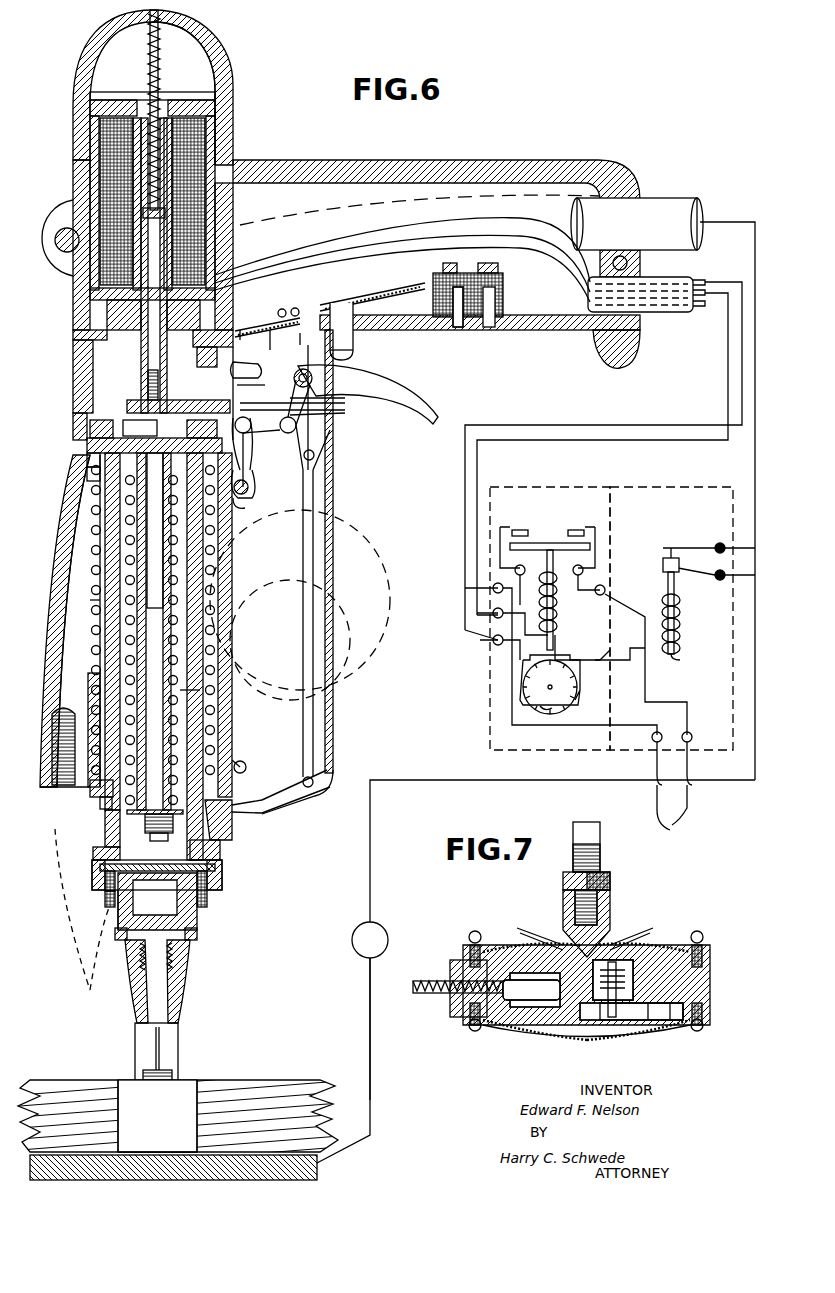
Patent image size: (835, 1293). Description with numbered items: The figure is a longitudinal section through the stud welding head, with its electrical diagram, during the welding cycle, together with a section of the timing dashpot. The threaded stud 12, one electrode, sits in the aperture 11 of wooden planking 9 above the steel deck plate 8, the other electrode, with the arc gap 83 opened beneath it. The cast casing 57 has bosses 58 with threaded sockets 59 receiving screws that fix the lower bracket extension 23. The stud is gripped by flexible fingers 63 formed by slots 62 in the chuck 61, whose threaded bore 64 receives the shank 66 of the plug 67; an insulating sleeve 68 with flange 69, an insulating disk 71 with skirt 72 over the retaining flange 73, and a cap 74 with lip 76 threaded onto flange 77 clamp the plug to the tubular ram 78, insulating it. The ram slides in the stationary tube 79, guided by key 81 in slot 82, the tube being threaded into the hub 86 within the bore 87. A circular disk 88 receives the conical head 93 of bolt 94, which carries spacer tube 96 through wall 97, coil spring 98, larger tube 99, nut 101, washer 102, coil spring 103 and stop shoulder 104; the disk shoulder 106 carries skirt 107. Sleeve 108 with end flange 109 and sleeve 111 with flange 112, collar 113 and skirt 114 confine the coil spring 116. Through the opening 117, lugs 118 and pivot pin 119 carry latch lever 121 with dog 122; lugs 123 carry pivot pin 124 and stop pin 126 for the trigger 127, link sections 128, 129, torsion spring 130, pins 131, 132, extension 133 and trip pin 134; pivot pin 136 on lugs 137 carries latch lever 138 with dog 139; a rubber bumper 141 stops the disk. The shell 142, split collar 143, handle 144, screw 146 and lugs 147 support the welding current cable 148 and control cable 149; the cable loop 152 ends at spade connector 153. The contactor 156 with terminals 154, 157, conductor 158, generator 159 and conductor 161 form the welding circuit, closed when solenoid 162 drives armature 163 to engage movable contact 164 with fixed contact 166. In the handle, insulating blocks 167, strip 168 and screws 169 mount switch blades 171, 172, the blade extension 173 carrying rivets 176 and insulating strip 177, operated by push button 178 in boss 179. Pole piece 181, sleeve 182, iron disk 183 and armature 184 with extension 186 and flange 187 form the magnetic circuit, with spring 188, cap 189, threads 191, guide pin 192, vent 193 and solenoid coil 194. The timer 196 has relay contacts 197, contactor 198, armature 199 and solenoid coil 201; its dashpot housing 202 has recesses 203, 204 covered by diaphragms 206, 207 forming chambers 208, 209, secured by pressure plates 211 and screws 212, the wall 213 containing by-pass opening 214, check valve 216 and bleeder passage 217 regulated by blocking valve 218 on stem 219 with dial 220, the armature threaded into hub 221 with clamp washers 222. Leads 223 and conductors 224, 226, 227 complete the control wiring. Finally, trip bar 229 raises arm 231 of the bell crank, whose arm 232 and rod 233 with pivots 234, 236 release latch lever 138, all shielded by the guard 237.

In FIG. 6, the steel deck plate 8 is at (318, 1173).
In FIG. 6, the wooden planking 9 is at (270, 1085).
In FIG. 6, the aperture 11 is at (190, 1080).
In FIG. 6, the threaded stud 12 is at (160, 1125).
In FIG. 6, the lower bracket extension 23 is at (233, 150).
In FIG. 6, the casing 57 is at (232, 590).
In FIG. 6, the bosses 58 is at (50, 704).
In FIG. 6, the threaded sockets 59 is at (60, 738).
In FIG. 6, the chuck 61 is at (186, 966).
In FIG. 6, the slots 62 is at (160, 1040).
In FIG. 6, the flexible fingers 63 is at (135, 1052).
In FIG. 6, the threaded bore 64 is at (130, 967).
In FIG. 6, the threaded shank 66 is at (137, 950).
In FIG. 6, the plug 67 is at (197, 915).
In FIG. 6, the insulating sleeve 68 is at (207, 895).
In FIG. 6, the peripheral flange 69 is at (105, 896).
In FIG. 6, the insulating disk 71 is at (149, 856).
In FIG. 6, the annular skirt 72 is at (105, 876).
In FIG. 6, the retaining flange 73 is at (220, 870).
In FIG. 6, the cap 74 is at (222, 862).
In FIG. 6, the annular lip 76 is at (110, 905).
In FIG. 6, the threaded flange 77 is at (220, 843).
In FIG. 6, the tubular ram 78 is at (105, 838).
In FIG. 6, the stationary tube 79 is at (105, 822).
In FIG. 6, the fixed key 81 is at (100, 802).
In FIG. 6, the slot 82 is at (141, 740).
In FIG. 6, the arc gap 83 is at (155, 1145).
In FIG. 6, the hub 86 is at (73, 336).
In FIG. 6, the bore 87 is at (222, 570).
In FIG. 6, the circular disk 88 is at (153, 428).
In FIG. 6, the conical head 93 is at (145, 428).
In FIG. 6, the bolt 94 is at (155, 605).
In FIG. 6, the spacer tube 96 is at (125, 520).
In FIG. 6, the wall 97 is at (203, 540).
In FIG. 6, the coil spring 98 is at (110, 536).
In FIG. 6, the larger tube 99 is at (206, 640).
In FIG. 6, the nut 101 is at (168, 835).
In FIG. 6, the washer 102 is at (140, 815).
In FIG. 6, the coil spring 103 is at (200, 700).
In FIG. 6, the shoulder 104 is at (100, 590).
In FIG. 6, the circular shoulder 106 is at (87, 444).
In FIG. 6, the tubular skirt 107 is at (87, 474).
In FIG. 6, the sleeve 108 is at (75, 552).
In FIG. 6, the end flange 109 is at (87, 460).
In FIG. 6, the sleeve 111 is at (100, 655).
In FIG. 6, the peripheral flange 112 is at (222, 820).
In FIG. 6, the annular collar 113 is at (90, 789).
In FIG. 6, the tubular skirt 114 is at (90, 677).
In FIG. 6, the coil spring 116 is at (92, 606).
In FIG. 6, the opening 117 is at (251, 392).
In FIG. 6, the lugs 118 is at (252, 503).
In FIG. 6, the pivot pin 119 is at (249, 487).
In FIG. 6, the latch lever 121 is at (250, 468).
In FIG. 6, the dog 122 is at (291, 410).
In FIG. 6, the lugs 123 is at (233, 385).
In FIG. 6, the pivot pin 124 is at (312, 380).
In FIG. 6, the stop pin 126 is at (247, 368).
In FIG. 6, the trigger 127 is at (412, 396).
In FIG. 6, the link section 128 is at (345, 402).
In FIG. 6, the link section 129 is at (255, 440).
In FIG. 6, the torsion spring 130 is at (340, 414).
In FIG. 6, the pivot pin 131 is at (258, 443).
In FIG. 6, the pivot pin 132 is at (297, 426).
In FIG. 6, the extension 133 is at (311, 344).
In FIG. 6, the trip pin 134 is at (284, 340).
In FIG. 6, the pivot pin 136 is at (245, 764).
In FIG. 6, the lugs 137 is at (235, 756).
In FIG. 6, the latch lever 138 is at (254, 800).
In FIG. 6, the dog 139 is at (296, 799).
In FIG. 6, the rubber bumper 141 is at (73, 409).
In FIG. 6, the tubular steel shell 142 is at (73, 281).
In FIG. 6, the split collar 143 is at (80, 181).
In FIG. 6, the pistol-grip handle 144 is at (433, 166).
In FIG. 6, the screw 146 is at (56, 250).
In FIG. 6, the apertured lugs 147 is at (58, 236).
In FIG. 6, the welding current cable 148 is at (650, 205).
In FIG. 6, the control current cable 149 is at (645, 282).
In FIG. 6, the loop 152 is at (370, 590).
In FIG. 6, the spade connector 153 is at (197, 936).
In FIG. 6, the terminal 154 is at (718, 544).
In FIG. 6, the electromagnetic contactor 156 is at (688, 486).
In FIG. 6, the terminal 157 is at (717, 580).
In FIG. 6, the conductor 158 is at (486, 780).
In FIG. 6, the welding current generator 159 is at (350, 938).
In FIG. 6, the conductor 161 is at (368, 1036).
In FIG. 6, the actuating solenoid 162 is at (682, 626).
In FIG. 6, the armature 163 is at (672, 656).
In FIG. 6, the movable contact 164 is at (668, 576).
In FIG. 6, the fixed contact 166 is at (663, 562).
In FIG. 6, the insulating blocks 167 is at (440, 278).
In FIG. 6, the flexible insulating strip 168 is at (553, 328).
In FIG. 6, the screws 169 is at (468, 330).
In FIG. 6, the switch blade 171 is at (390, 292).
In FIG. 6, the switch blade 172 is at (428, 330).
In FIG. 6, the extension 173 is at (250, 322).
In FIG. 6, the rivets 176 is at (293, 301).
In FIG. 6, the insulating strip 177 is at (256, 340).
In FIG. 6, the push button 178 is at (350, 358).
In FIG. 6, the apertured boss 179 is at (354, 340).
In FIG. 6, the pole piece 181 is at (107, 316).
In FIG. 6, the non-ferrous sleeve 182 is at (100, 297).
In FIG. 6, the iron disk 183 is at (95, 106).
In FIG. 6, the armature 184 is at (85, 362).
In FIG. 6, the tubular extension 186 is at (150, 160).
In FIG. 6, the flange 187 is at (122, 98).
In FIG. 6, the coil spring 188 is at (148, 66).
In FIG. 6, the cap 189 is at (231, 74).
In FIG. 6, the threads 191 is at (90, 128).
In FIG. 6, the guide pin 192 is at (150, 45).
In FIG. 6, the vent opening 193 is at (221, 50).
In FIG. 6, the solenoid coil 194 is at (115, 195).
In FIG. 6, the timer 196 is at (566, 486).
In FIG. 6, the relay contacts 197 is at (528, 532).
In FIG. 6, the movable contactor 198 is at (538, 550).
In FIG. 6, the armature 199 is at (553, 636).
In FIG. 7, the armature 199 is at (598, 829).
In FIG. 6, the solenoid coil 201 is at (557, 613).
In FIG. 6, the housing 202 is at (578, 690).
In FIG. 7, the housing 202 is at (710, 972).
In FIG. 7, the recess 203 is at (660, 945).
In FIG. 7, the recess 204 is at (672, 1035).
In FIG. 7, the diaphragm 206 is at (500, 946).
In FIG. 7, the diaphragm 207 is at (535, 1002).
In FIG. 7, the chamber 208 is at (615, 958).
In FIG. 7, the chamber 209 is at (658, 1010).
In FIG. 7, the pressure plates 211 is at (692, 940).
In FIG. 7, the screws 212 is at (703, 937).
In FIG. 7, the housing wall 213 is at (640, 1022).
In FIG. 7, the by-pass opening 214 is at (592, 985).
In FIG. 7, the check valve 216 is at (597, 1025).
In FIG. 7, the bleeder passage 217 is at (555, 1025).
In FIG. 7, the tapered blocking valve 218 is at (490, 1028).
In FIG. 7, the threaded stem 219 is at (420, 994).
In FIG. 6, the dial 220 is at (556, 708).
In FIG. 7, the hub 221 is at (610, 888).
In FIG. 7, the clamp washers 222 is at (528, 930).
In FIG. 6, the control current input leads 223 is at (678, 784).
In FIG. 6, the conductor 224 is at (420, 222).
In FIG. 6, the conductor 226 is at (343, 243).
In FIG. 6, the conductor 227 is at (705, 308).
In FIG. 6, the trip bar 229 is at (160, 385).
In FIG. 6, the arm 231 is at (230, 345).
In FIG. 6, the arm 232 is at (315, 455).
In FIG. 6, the rod 233 is at (312, 563).
In FIG. 6, the pivot 234 is at (322, 466).
In FIG. 6, the pivot 236 is at (310, 779).
In FIG. 6, the channel-shaped guard 237 is at (333, 698).